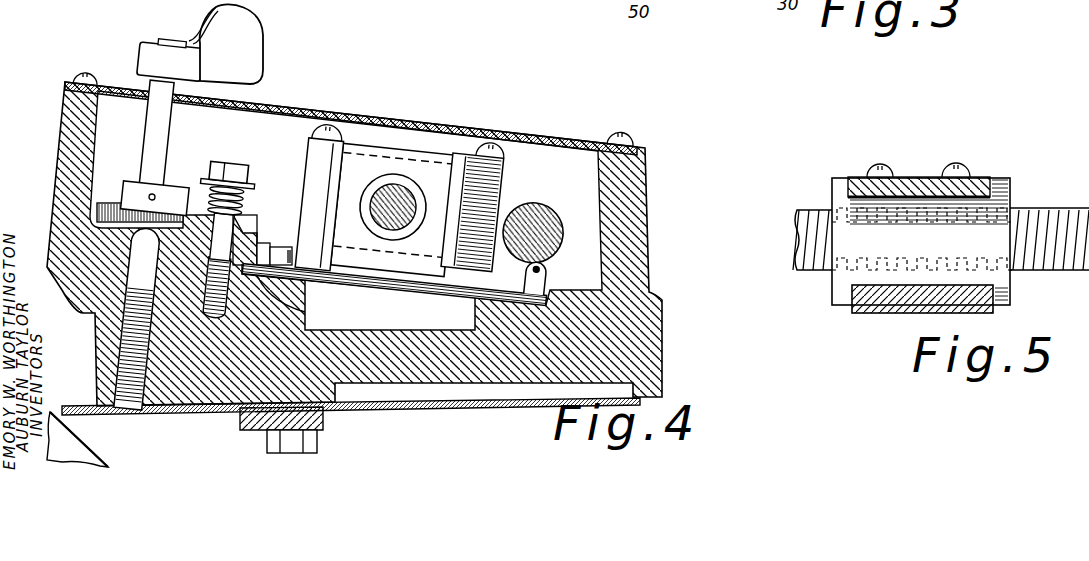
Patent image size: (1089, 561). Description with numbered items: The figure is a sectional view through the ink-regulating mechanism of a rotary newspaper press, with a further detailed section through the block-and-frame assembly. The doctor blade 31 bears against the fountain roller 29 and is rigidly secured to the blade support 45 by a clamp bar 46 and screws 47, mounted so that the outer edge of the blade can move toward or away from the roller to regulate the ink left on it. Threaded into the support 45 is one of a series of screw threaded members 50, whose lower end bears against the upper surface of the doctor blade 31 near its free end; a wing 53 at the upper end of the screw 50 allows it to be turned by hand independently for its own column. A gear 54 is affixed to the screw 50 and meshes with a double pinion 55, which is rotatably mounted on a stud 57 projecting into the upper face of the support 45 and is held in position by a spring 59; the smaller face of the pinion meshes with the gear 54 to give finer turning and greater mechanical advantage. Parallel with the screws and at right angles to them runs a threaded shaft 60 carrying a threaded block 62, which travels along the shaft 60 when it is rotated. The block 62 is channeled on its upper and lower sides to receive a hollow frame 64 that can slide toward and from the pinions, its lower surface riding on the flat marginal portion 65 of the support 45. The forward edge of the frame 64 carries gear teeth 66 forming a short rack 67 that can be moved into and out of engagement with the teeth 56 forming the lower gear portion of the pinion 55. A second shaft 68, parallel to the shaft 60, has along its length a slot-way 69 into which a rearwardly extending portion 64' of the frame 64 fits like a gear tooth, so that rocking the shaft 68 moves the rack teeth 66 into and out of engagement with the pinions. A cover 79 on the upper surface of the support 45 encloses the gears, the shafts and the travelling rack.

In FIG. 4, the fountain roller 29 is at (85, 448).
In FIG. 4, the doctor blade 31 is at (80, 407).
In FIG. 4, the blade support 45 is at (640, 340).
In FIG. 4, the clamp bar 46 is at (320, 417).
In FIG. 4, the screws 47 is at (310, 438).
In FIG. 4, the screw threaded member 50 is at (157, 118).
In FIG. 4, the wing 53 is at (254, 36).
In FIG. 4, the gear 54 is at (108, 201).
In FIG. 4, the double pinion 55 is at (243, 221).
In FIG. 4, the teeth 56 is at (292, 310).
In FIG. 4, the stud 57 is at (232, 165).
In FIG. 4, the spring 59 is at (247, 194).
In FIG. 4, the threaded shaft 60 is at (377, 197).
In FIG. 5, the threaded shaft 60 is at (1040, 207).
In FIG. 4, the threaded block 62 is at (440, 190).
In FIG. 5, the threaded block 62 is at (837, 202).
In FIG. 4, the hollow frame 64 is at (420, 205).
In FIG. 5, the hollow frame 64 is at (908, 247).
In FIG. 4, the rearwardly extending portion 64' is at (561, 275).
In FIG. 4, the flat marginal portion 65 is at (312, 292).
In FIG. 4, the gear teeth 66 is at (265, 232).
In FIG. 4, the rack 67 is at (277, 251).
In FIG. 4, the second shaft 68 is at (543, 227).
In FIG. 4, the slot-way 69 is at (541, 257).
In FIG. 4, the cover 79 is at (310, 108).